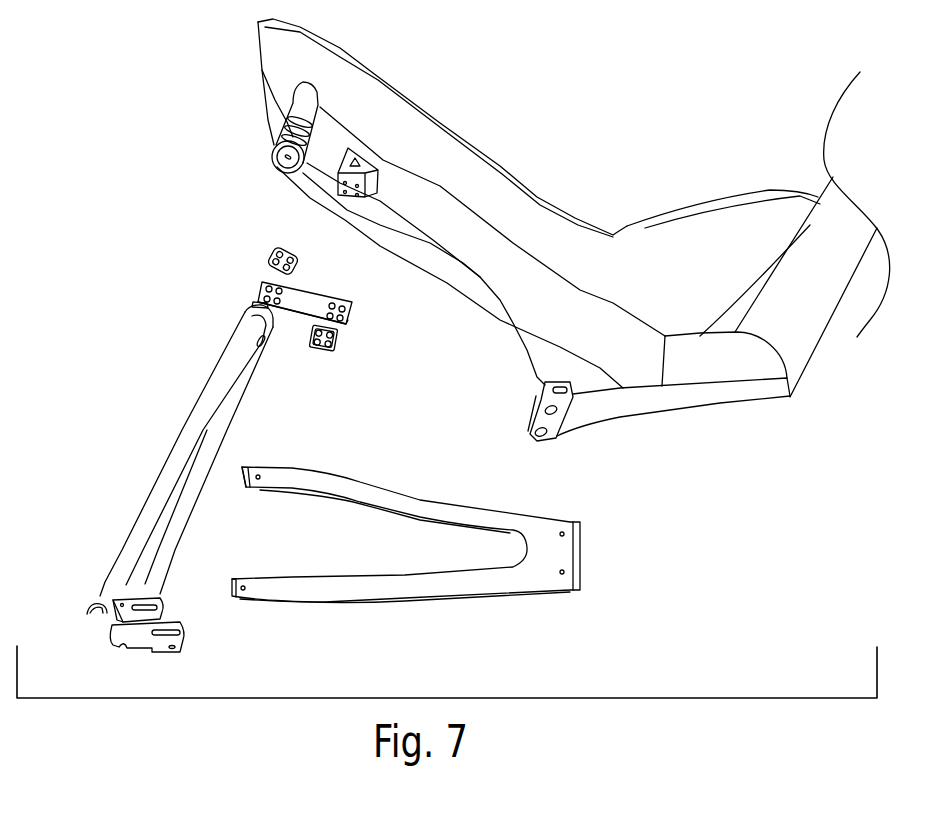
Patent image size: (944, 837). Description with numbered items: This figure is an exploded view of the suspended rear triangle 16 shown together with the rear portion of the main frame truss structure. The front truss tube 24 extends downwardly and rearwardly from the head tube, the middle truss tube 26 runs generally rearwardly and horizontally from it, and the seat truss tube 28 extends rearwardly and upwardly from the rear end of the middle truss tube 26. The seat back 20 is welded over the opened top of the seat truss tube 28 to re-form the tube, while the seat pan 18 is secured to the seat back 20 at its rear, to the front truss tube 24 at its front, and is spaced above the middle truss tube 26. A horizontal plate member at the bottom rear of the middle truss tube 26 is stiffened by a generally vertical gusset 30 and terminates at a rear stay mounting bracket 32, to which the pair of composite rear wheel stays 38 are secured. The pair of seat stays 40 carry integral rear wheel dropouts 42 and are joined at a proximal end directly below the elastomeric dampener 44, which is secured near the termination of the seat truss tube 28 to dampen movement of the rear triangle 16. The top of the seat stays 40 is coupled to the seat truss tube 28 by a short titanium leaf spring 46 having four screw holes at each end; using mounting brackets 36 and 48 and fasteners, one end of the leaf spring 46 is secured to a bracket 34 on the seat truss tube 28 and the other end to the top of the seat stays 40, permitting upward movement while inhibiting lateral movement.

The rear triangle 16 is at (130, 213).
The seat pan 18 is at (720, 203).
The seat back 20 is at (413, 100).
The front truss tube 24 is at (797, 325).
The middle truss tube 26 is at (702, 360).
The seat truss tube 28 is at (500, 262).
The gusset 30 is at (538, 344).
The rear stay mounting bracket 32 is at (553, 422).
The bracket 34 is at (342, 185).
The mounting bracket 36 is at (340, 345).
The rear wheel stays 38 is at (420, 585).
The seat stays 40 is at (190, 430).
The rear wheel dropouts 42 is at (120, 600).
The elastomeric dampener 44 is at (288, 134).
The leaf spring 46 is at (303, 293).
The mounting bracket 48 is at (272, 253).